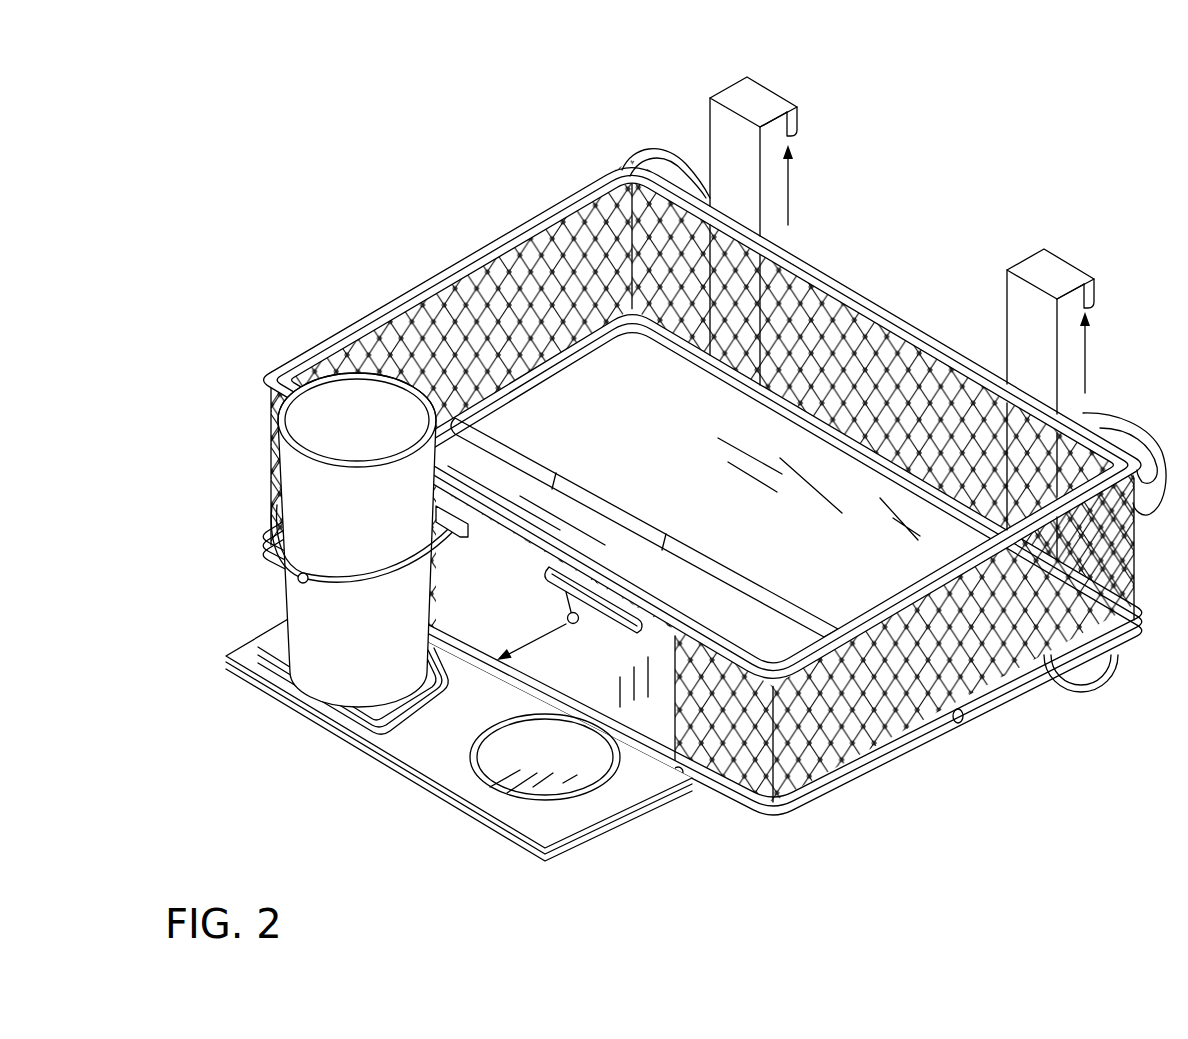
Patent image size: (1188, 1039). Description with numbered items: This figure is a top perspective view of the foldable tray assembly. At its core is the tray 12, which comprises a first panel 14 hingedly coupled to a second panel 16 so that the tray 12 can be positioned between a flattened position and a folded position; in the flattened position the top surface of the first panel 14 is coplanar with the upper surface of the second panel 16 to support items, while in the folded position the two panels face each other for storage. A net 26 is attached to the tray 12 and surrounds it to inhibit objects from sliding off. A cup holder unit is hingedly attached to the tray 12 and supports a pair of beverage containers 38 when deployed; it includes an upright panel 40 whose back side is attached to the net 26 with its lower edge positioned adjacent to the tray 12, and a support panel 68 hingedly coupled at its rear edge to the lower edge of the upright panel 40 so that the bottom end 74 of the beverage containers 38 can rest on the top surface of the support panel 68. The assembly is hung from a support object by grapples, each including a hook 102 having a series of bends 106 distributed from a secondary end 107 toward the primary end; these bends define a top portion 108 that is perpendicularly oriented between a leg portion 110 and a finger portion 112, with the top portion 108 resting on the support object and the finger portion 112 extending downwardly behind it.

The tray 12 is at (714, 516).
The first panel 14 is at (793, 470).
The second panel 16 is at (517, 498).
The net 26 is at (886, 727).
The beverage containers 38 is at (300, 598).
The upright panel 40 is at (633, 693).
The support panel 68 is at (452, 769).
The bottom end 74 is at (337, 698).
The hook 102 is at (805, 290).
The series of bends 106 is at (748, 76).
The secondary end 107 is at (802, 134).
The top portion 108 is at (739, 88).
The leg portion 110 is at (718, 140).
The finger portion 112 is at (812, 108).